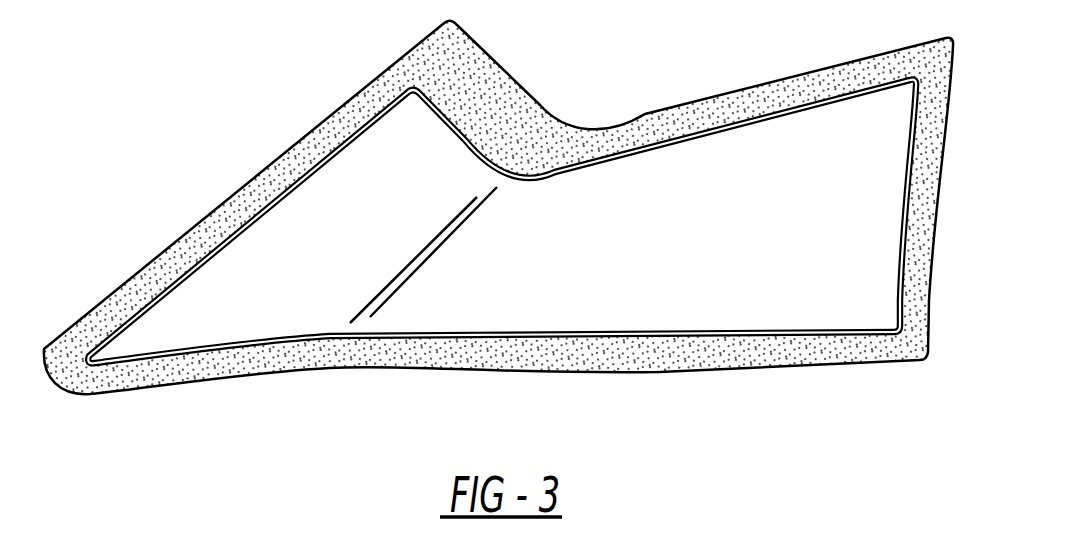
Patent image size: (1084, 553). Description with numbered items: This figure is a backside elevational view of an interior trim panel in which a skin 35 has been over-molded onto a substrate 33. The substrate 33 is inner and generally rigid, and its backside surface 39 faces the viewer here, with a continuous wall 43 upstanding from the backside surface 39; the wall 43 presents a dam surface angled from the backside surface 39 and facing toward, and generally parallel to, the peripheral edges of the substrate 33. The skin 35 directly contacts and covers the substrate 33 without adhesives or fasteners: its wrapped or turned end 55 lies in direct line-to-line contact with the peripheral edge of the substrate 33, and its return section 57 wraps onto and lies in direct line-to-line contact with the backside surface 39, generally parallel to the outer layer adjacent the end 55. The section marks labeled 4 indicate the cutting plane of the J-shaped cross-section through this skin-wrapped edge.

The substrate 33 is at (794, 216).
The skin 35 is at (720, 352).
The backside surface 39 is at (305, 282).
The wall 43 is at (187, 273).
The turned end 55 is at (223, 198).
The return section 57 is at (490, 113).
The section line 4- 4 is at (296, 63).